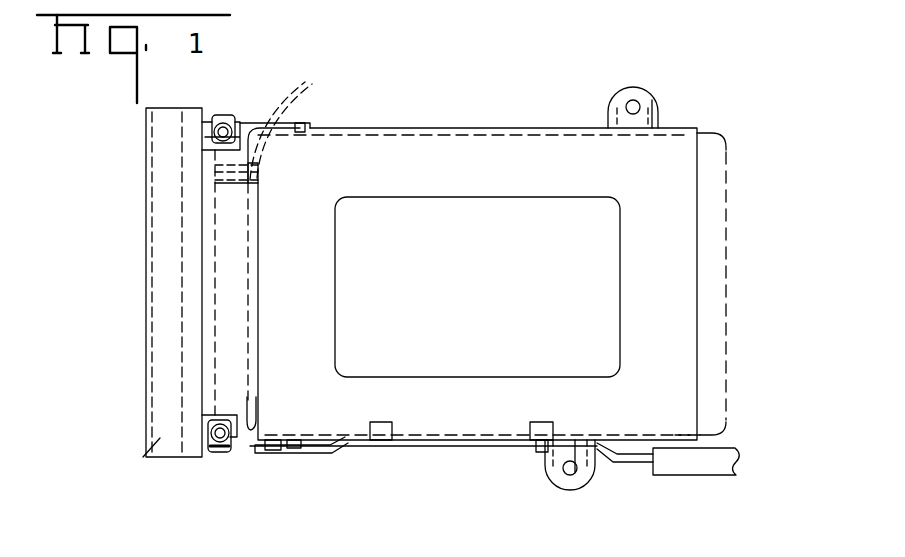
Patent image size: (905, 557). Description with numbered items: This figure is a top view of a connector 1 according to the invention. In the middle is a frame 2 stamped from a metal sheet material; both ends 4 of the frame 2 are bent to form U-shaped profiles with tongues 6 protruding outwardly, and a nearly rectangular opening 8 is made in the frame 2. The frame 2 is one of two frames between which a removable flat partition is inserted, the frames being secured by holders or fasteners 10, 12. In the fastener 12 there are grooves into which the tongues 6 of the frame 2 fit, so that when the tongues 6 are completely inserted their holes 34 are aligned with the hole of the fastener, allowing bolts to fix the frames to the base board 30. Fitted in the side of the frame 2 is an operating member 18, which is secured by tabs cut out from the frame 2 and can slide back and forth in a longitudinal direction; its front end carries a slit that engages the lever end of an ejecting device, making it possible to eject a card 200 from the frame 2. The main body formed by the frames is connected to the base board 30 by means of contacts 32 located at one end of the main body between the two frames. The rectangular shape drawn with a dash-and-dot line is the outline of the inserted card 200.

The portable electronic device / housing assembly 1 is at (506, 70).
The frame 2 is at (393, 152).
The ends of frame 4 is at (456, 128).
The tongues 6 is at (658, 110).
The opening 8 is at (480, 375).
The holder or fastener 10 is at (225, 117).
The fastener 12 is at (610, 100).
The operating members 18 is at (467, 447).
The base board 30 is at (143, 457).
The contacts 32 is at (250, 480).
The holes of tongues 34 is at (636, 96).
The card 200 is at (723, 292).